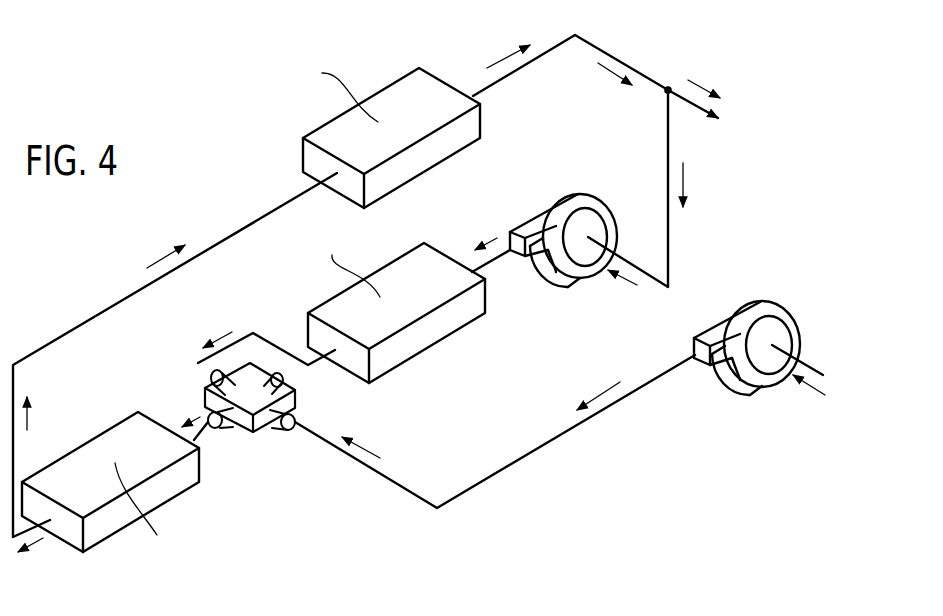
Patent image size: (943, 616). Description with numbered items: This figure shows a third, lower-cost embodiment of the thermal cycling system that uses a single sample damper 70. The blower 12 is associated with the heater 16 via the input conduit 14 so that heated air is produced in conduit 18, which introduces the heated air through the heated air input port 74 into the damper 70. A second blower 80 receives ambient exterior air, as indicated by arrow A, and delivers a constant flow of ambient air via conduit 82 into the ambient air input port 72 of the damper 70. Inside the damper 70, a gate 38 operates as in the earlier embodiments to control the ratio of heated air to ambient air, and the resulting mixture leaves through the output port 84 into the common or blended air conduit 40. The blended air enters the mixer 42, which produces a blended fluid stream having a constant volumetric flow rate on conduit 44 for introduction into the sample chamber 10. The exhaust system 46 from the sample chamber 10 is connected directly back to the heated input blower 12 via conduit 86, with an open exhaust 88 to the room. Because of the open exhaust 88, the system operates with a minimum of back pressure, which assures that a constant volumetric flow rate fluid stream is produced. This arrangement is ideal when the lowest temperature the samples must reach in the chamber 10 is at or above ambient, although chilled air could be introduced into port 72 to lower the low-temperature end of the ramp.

The sample chamber 10 is at (390, 82).
The blower 12 is at (540, 222).
The input conduit 14 is at (493, 262).
The heater 16 is at (432, 258).
The conduit 18 is at (278, 346).
The gate 38 is at (253, 392).
The common or blended air conduit 40 is at (197, 444).
The mixer 42 is at (98, 435).
The conduit 44 is at (103, 308).
The exhaust system 46 is at (517, 76).
The sample damper 70 is at (298, 392).
The ambient air input port 72 is at (287, 425).
The heated air input port 74 is at (212, 380).
The second blower 80 is at (772, 302).
The conduit 82 is at (600, 413).
The output port 84 is at (222, 430).
The conduit 86 is at (666, 153).
The open exhaust 88 is at (682, 92).
The arrow A is at (812, 390).